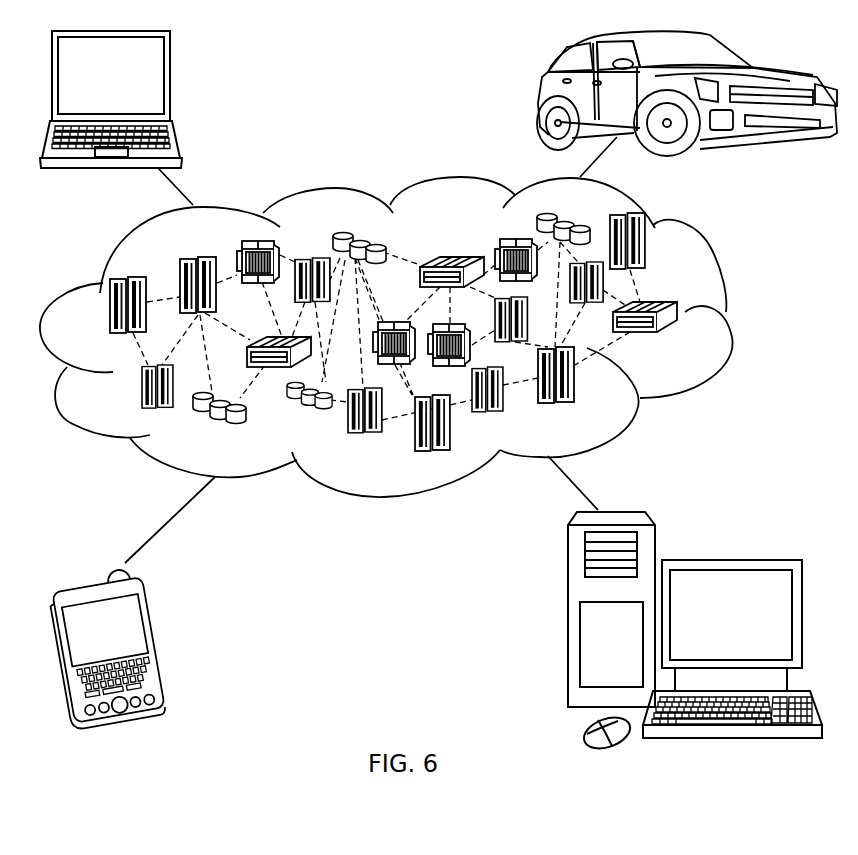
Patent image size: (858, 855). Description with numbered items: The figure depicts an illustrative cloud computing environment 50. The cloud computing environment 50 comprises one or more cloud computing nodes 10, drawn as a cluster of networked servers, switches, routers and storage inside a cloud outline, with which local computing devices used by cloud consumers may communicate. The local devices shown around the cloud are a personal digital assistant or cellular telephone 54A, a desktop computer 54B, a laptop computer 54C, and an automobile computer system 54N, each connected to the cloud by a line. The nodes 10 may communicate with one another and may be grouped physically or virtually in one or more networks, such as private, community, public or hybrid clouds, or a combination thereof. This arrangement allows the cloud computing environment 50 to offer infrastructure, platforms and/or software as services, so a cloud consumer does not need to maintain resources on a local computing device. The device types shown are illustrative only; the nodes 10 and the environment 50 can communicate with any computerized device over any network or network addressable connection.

The cloud computing node 10 is at (680, 339).
The cloud computing environment 50 is at (730, 313).
The personal digital assistant or cellular telephone 54A is at (162, 642).
The desktop computer 54B is at (727, 559).
The laptop computer 54C is at (170, 81).
The automobile computer system 54N is at (542, 92).